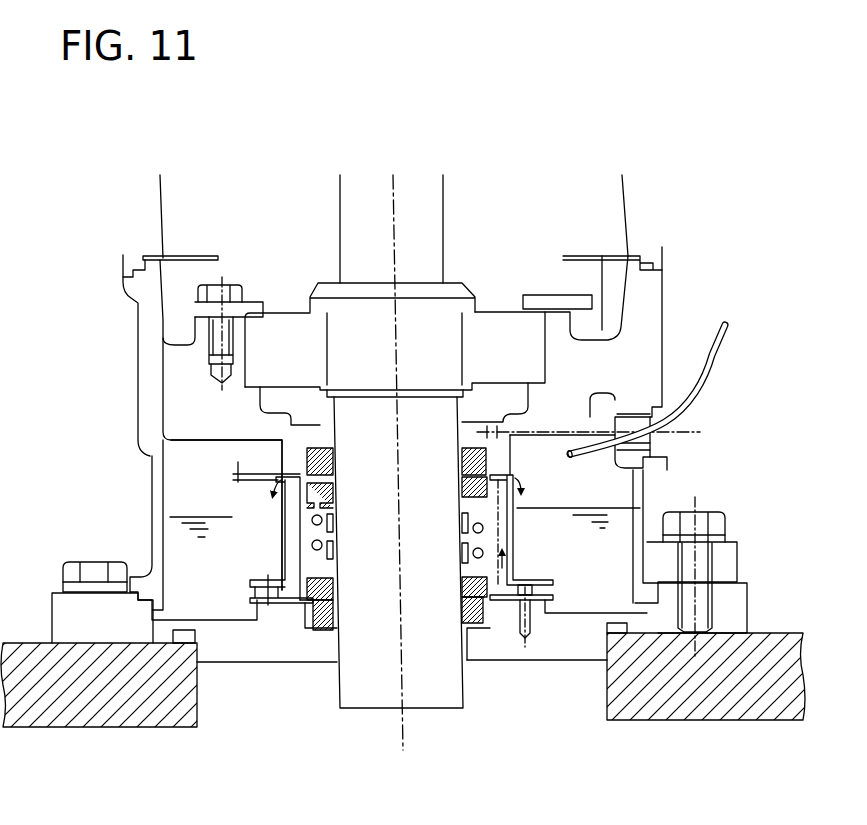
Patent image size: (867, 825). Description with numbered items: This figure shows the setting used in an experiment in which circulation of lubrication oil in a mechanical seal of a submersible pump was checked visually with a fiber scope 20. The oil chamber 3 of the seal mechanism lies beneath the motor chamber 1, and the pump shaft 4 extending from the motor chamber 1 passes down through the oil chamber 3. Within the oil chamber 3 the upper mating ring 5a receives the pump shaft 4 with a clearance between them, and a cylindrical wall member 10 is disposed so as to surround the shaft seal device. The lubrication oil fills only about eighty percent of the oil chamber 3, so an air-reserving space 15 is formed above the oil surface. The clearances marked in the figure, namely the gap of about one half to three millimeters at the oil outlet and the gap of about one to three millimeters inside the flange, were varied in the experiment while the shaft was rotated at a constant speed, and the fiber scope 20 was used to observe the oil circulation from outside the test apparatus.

The motor chamber 1 is at (522, 214).
The oil chamber 3 is at (188, 543).
The pump shaft 4 is at (413, 693).
The upper mating ring 5a is at (303, 450).
The cylindrical wall member 10 is at (517, 547).
The air-reserving space 15 is at (192, 482).
The fiber scope 20 is at (707, 403).